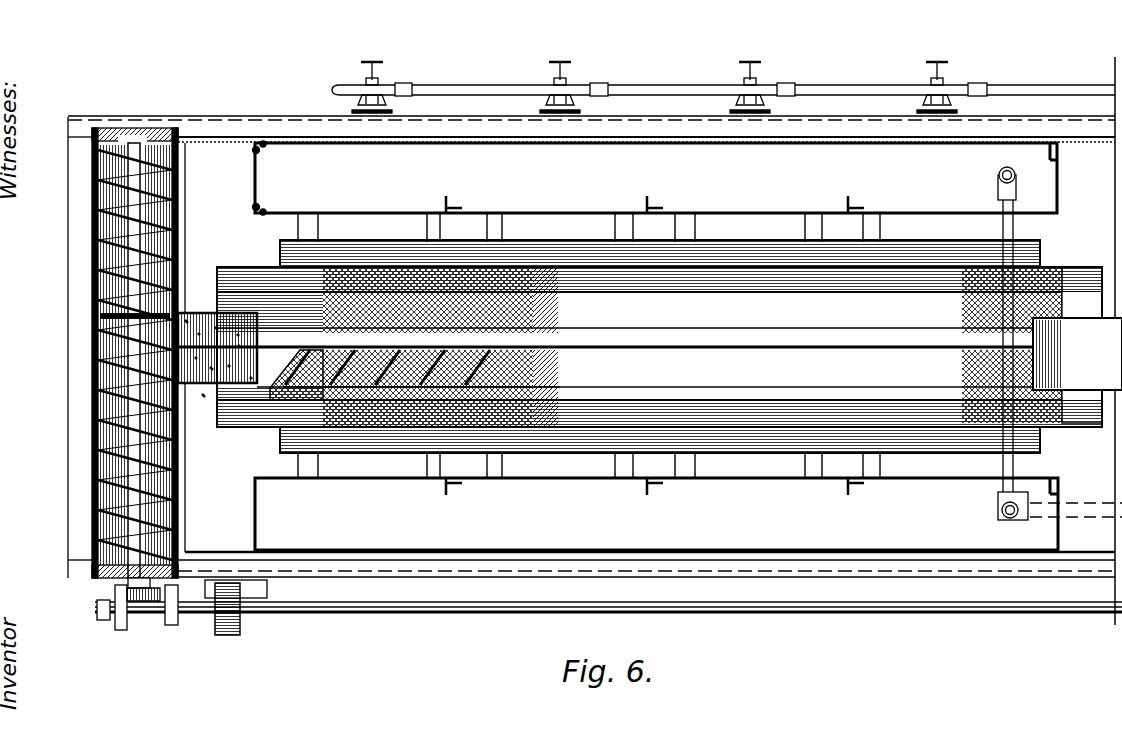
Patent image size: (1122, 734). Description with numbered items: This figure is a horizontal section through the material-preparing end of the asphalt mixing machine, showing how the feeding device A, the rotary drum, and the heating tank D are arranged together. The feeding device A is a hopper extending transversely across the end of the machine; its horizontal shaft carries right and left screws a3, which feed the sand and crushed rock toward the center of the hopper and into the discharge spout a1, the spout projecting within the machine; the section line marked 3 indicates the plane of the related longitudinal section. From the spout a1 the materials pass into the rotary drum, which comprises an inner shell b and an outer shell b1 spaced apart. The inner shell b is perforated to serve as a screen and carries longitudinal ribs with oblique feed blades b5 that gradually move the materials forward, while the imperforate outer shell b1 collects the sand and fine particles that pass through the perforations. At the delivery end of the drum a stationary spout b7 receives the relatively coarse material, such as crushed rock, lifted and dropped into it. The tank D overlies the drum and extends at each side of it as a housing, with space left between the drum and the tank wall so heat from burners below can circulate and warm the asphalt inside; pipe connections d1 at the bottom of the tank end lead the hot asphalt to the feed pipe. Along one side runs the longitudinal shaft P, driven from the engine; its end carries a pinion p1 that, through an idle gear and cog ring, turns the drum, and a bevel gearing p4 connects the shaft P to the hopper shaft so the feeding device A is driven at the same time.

The feeding device A is at (95, 420).
The section line indicator 3 is at (93, 390).
The right and left screws a3 is at (66, 348).
The discharge spout a1 is at (206, 345).
The tank D is at (656, 345).
The outer shell b1 is at (750, 241).
The inner shell b is at (676, 268).
The feed blades b5 is at (562, 360).
The stationary spout b7 is at (1023, 340).
The pipe connections d1 is at (1000, 510).
The shaft P is at (416, 617).
The bevel gearing p4 is at (138, 630).
The pinion p1 is at (230, 636).